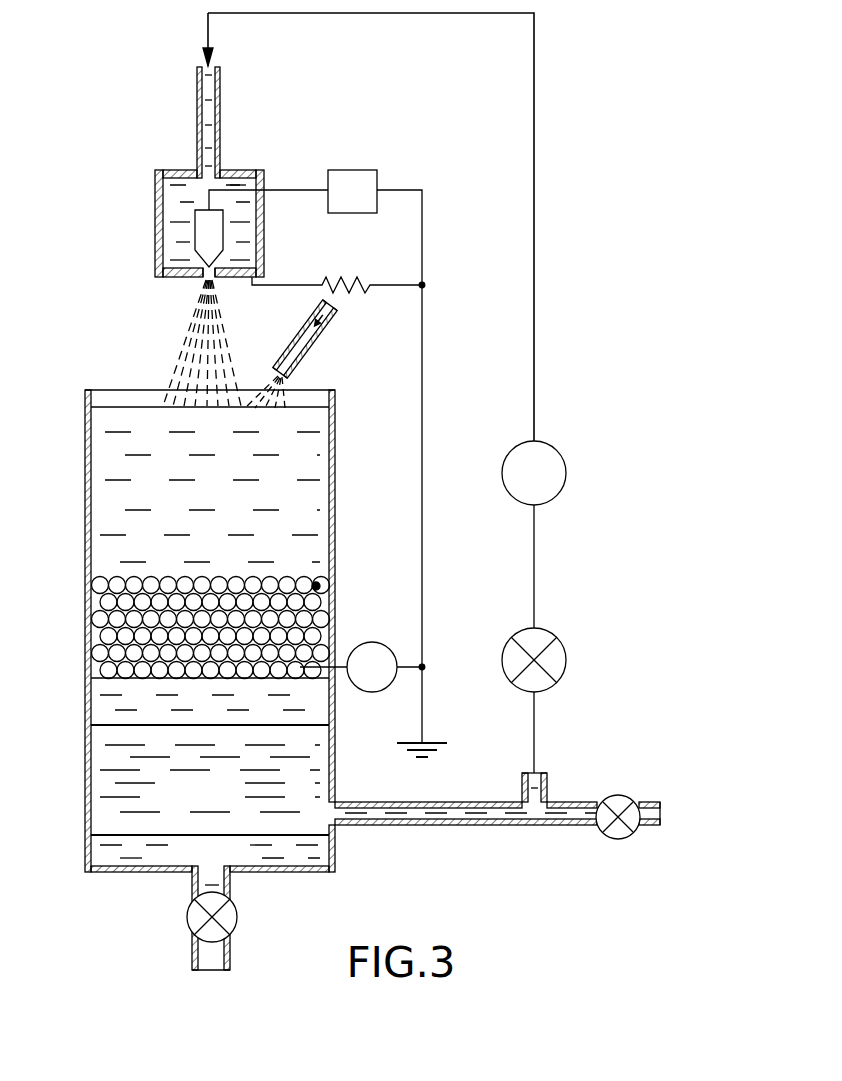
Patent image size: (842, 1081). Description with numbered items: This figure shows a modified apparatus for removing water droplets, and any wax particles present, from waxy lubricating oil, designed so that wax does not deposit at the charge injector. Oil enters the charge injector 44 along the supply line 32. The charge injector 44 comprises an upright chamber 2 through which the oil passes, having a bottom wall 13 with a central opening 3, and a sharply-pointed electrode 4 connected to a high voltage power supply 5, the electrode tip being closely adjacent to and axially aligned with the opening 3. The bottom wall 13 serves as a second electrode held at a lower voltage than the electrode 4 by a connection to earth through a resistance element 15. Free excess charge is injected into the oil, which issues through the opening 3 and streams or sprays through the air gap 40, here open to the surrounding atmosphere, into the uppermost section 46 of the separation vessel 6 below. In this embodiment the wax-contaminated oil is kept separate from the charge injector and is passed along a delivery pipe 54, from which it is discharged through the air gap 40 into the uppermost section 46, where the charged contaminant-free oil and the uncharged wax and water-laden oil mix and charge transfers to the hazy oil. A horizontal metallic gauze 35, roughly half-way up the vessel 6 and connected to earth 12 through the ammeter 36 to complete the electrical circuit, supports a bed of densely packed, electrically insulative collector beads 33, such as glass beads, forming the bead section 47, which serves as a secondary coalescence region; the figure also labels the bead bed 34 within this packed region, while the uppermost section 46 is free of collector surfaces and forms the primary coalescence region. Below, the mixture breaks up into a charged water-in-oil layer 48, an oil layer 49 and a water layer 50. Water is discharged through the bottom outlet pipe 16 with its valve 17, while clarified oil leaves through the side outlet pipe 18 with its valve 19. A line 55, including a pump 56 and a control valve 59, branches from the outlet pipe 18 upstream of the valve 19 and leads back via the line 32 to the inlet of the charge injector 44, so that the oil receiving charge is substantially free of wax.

The supply line 32 is at (213, 118).
The charge injector 44 is at (138, 229).
The pointed electrode 4 is at (215, 239).
The high voltage power supply 5 is at (344, 205).
The resistance element 15 is at (357, 284).
The chamber 2 is at (160, 277).
The bottom wall 13 is at (186, 277).
The opening 3 is at (216, 290).
The delivery pipe 54 is at (318, 338).
The air gap 40 is at (247, 364).
The separation vessel 6 is at (86, 750).
The uppermost section 46 is at (167, 471).
The collector beads 33 is at (108, 620).
The ball bed 34 is at (312, 620).
The bead section 47 is at (318, 586).
The metallic gauze 35 is at (172, 681).
The charged water-in-oil layer 48 is at (265, 718).
The ammeter 36 is at (392, 651).
The earth 12 is at (441, 743).
The oil layer 49 is at (112, 796).
The water layer 50 is at (112, 850).
The outlet pipe 16 is at (195, 878).
The valve 17 is at (228, 924).
The outlet pipe 18 is at (655, 802).
The line 55 is at (548, 782).
The valve 19 is at (622, 832).
The pump 56 is at (557, 492).
The control valve 59 is at (563, 676).